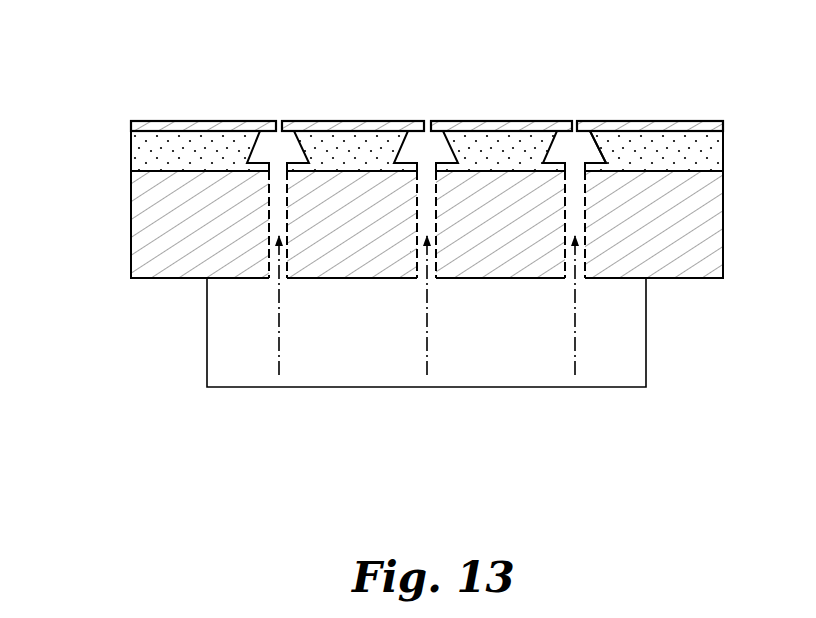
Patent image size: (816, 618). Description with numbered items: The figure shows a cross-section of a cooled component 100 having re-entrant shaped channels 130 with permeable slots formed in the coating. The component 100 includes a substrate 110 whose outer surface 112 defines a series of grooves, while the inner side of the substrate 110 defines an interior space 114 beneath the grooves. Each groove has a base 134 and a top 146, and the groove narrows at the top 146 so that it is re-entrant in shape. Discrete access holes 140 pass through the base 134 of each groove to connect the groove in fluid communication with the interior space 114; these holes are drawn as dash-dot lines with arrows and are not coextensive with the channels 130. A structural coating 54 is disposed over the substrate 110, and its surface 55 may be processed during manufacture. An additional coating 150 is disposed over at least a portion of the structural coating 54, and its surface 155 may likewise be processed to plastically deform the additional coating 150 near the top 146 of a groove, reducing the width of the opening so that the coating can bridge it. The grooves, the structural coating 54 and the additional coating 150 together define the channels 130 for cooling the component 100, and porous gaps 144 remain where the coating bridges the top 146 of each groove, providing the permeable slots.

The component 100 is at (53, 57).
The substrate 110 is at (697, 230).
The outer surface 112 is at (139, 175).
The interior space 114 is at (348, 333).
The channels 130 is at (583, 155).
The base 134 is at (597, 172).
The access holes 140 is at (277, 218).
The porous gaps 144 is at (273, 116).
The top 146 is at (579, 125).
The additional coating 150 is at (165, 125).
The surface 155 is at (511, 116).
The structural coating 54 is at (713, 150).
The surface 55 is at (723, 128).